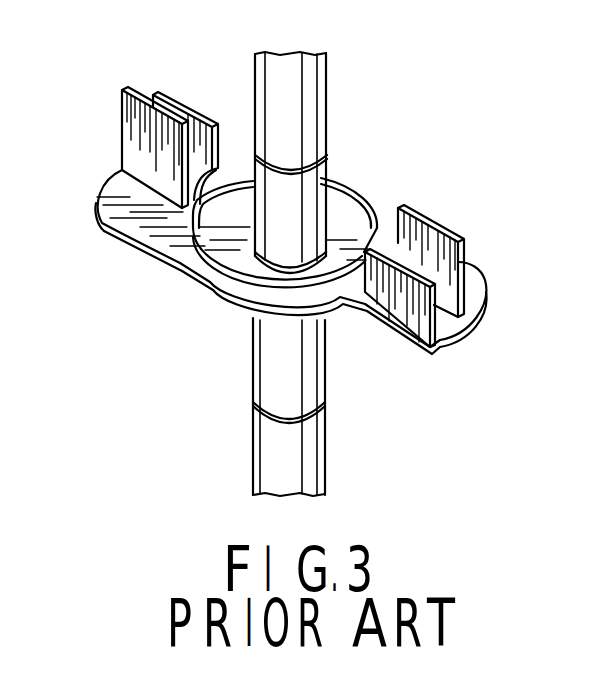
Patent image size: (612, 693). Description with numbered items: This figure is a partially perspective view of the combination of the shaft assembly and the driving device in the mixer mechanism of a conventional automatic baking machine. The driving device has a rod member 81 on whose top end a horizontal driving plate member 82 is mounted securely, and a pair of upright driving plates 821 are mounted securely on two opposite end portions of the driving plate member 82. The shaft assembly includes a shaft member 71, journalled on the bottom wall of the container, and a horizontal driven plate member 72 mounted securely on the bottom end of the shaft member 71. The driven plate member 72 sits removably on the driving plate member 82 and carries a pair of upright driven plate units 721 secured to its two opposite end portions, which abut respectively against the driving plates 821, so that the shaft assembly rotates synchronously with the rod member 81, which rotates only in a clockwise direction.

The shaft member 71 is at (327, 93).
The driven plate member 72 is at (353, 192).
The driven plate units 721 is at (188, 143).
The rod member 81 is at (258, 375).
The driving plate member 82 is at (98, 194).
The driving plates 821 is at (127, 132).